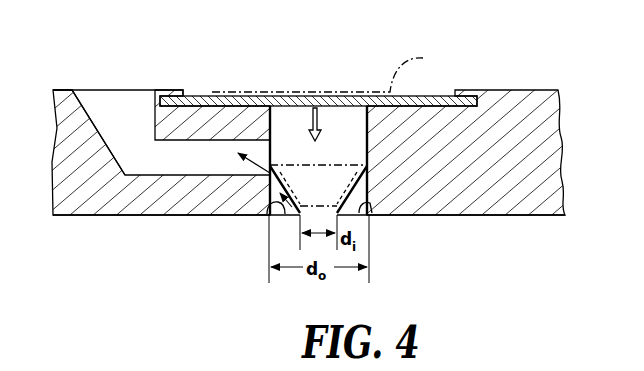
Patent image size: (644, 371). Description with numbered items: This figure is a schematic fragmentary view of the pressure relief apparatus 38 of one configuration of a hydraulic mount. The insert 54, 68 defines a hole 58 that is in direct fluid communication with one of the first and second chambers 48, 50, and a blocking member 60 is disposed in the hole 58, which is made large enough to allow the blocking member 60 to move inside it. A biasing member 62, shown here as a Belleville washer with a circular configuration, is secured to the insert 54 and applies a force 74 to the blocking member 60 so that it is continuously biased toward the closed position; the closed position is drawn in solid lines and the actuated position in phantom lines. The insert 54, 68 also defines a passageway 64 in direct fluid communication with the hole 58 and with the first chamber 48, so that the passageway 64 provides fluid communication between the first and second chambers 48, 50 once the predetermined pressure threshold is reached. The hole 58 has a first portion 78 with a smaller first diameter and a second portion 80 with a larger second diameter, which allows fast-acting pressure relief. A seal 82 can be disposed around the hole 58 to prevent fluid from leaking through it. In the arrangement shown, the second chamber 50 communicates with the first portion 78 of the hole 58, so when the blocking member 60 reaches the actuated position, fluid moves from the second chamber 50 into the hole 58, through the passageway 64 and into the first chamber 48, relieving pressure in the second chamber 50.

The pressure relief apparatus 38 is at (548, 68).
The first chamber 48 is at (100, 66).
The second chamber 50 is at (100, 255).
The insert 54 is at (80, 175).
The insert 68 is at (75, 197).
The hole 58 is at (317, 212).
The blocking member 60 is at (283, 133).
The biasing member 62 is at (522, 41).
The passageway 64 is at (127, 103).
The force 74 is at (311, 107).
The first portion 78 is at (330, 128).
The second portion 80 is at (360, 193).
The seal 82 is at (265, 201).